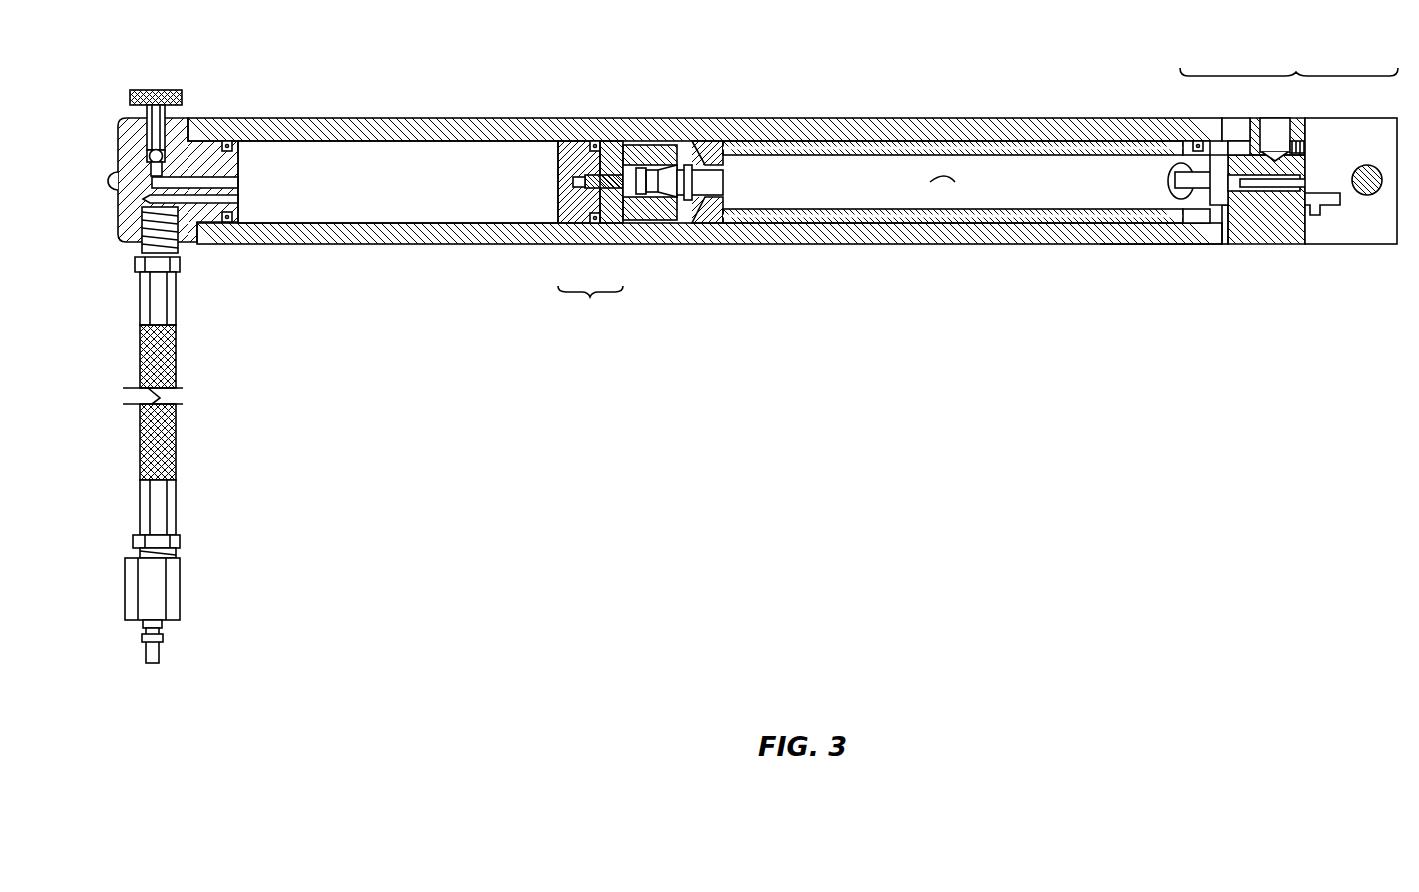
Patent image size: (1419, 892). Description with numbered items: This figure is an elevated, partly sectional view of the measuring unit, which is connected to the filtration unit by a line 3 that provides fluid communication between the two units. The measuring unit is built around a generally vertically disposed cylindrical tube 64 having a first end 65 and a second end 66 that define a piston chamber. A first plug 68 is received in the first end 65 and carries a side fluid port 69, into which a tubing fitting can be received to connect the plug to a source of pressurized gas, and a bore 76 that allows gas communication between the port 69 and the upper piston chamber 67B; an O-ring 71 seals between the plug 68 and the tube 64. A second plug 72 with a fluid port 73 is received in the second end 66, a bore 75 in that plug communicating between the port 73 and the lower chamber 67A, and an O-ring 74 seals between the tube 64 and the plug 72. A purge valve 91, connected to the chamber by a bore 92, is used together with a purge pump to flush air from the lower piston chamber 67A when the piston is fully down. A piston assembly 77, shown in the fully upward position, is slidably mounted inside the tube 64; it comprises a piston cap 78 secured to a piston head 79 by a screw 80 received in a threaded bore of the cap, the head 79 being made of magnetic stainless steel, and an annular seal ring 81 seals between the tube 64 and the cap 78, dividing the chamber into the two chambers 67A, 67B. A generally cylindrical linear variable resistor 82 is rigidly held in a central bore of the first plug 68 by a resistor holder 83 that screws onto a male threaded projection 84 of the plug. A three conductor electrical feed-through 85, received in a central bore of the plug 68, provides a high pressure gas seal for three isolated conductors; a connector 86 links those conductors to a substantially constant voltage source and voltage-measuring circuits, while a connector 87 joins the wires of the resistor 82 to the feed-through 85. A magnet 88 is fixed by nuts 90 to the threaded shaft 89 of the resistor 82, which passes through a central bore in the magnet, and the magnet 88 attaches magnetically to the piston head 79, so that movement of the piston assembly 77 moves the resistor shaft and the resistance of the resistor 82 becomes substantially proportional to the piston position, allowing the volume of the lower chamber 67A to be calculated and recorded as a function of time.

The line 3 is at (170, 467).
The cylindrical tube 64 is at (705, 199).
The first end 65 is at (1152, 262).
The second end 66 is at (192, 199).
The lower piston chamber 67A is at (398, 153).
The upper piston chamber 67B is at (953, 153).
The first plug 68 is at (1289, 142).
The side fluid port 69 is at (1293, 122).
The O-ring 71 is at (1172, 211).
The second plug 72 is at (85, 197).
The fluid port 73 is at (129, 244).
The O-ring 74 is at (256, 117).
The bore 75 is at (271, 243).
The bore 76 is at (1254, 119).
The piston assembly 77 is at (590, 305).
The piston cap 78 is at (536, 211).
The piston head 79 is at (571, 211).
The screw 80 is at (589, 153).
The annular seal ring 81 is at (566, 136).
The linear variable resistor 82 is at (903, 228).
The resistor holder 83 is at (668, 124).
The male threaded projection 84 is at (1195, 141).
The three conductor electrical feed-through 85 is at (1287, 209).
The connector 86 is at (1357, 199).
The connector 87 is at (1236, 219).
The magnet 88 is at (631, 213).
The threaded shaft 89 is at (747, 229).
The nuts 90 is at (713, 223).
The purge valve 91 is at (139, 117).
The bore 92 is at (243, 143).